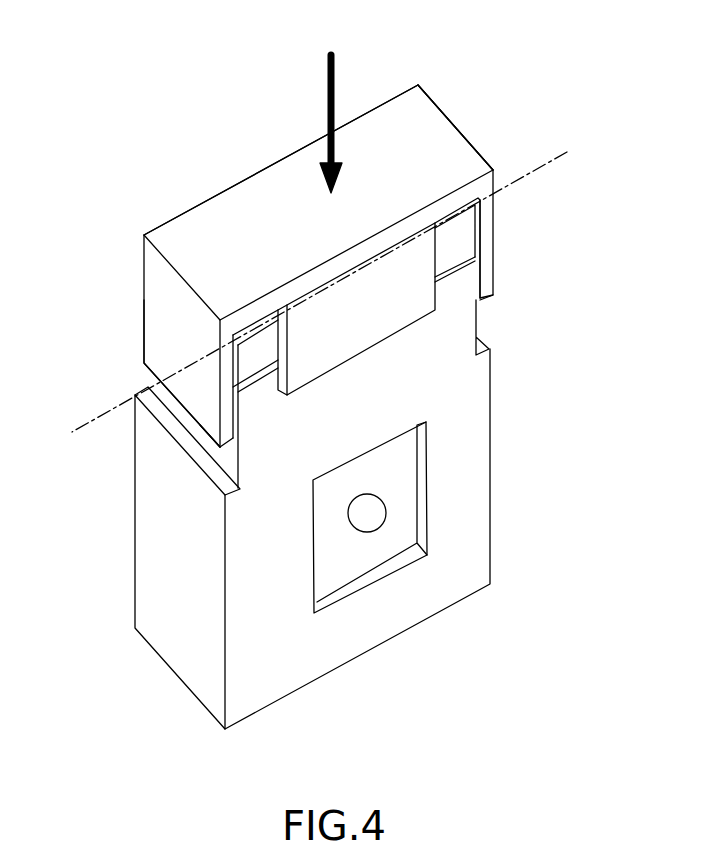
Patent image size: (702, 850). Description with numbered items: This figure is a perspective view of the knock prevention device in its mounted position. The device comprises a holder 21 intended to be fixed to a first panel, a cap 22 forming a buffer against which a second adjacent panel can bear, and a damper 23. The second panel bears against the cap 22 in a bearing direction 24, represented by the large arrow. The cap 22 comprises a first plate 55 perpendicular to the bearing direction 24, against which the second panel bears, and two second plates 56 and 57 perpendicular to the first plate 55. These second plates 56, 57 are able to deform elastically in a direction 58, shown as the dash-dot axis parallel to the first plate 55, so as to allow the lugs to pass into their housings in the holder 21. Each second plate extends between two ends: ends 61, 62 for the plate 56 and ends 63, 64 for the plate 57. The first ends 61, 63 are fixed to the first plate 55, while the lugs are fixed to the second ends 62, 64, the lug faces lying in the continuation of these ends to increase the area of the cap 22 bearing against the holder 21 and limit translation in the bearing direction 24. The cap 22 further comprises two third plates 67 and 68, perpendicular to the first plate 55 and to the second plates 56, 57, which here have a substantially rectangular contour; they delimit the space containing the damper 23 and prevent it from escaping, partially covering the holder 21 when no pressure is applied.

The holder 21 is at (475, 483).
The cap 22 is at (448, 155).
The damper 23 is at (460, 232).
The bearing direction 24 is at (335, 73).
The first plate 55 is at (300, 175).
The second plate 56 is at (487, 286).
The second plate 57 is at (163, 331).
The direction 58 is at (98, 415).
The end 61 is at (430, 92).
The end 62 is at (488, 300).
The end 63 is at (184, 281).
The end 64 is at (222, 445).
The third plate 67 is at (360, 332).
The third plate 68 is at (225, 176).